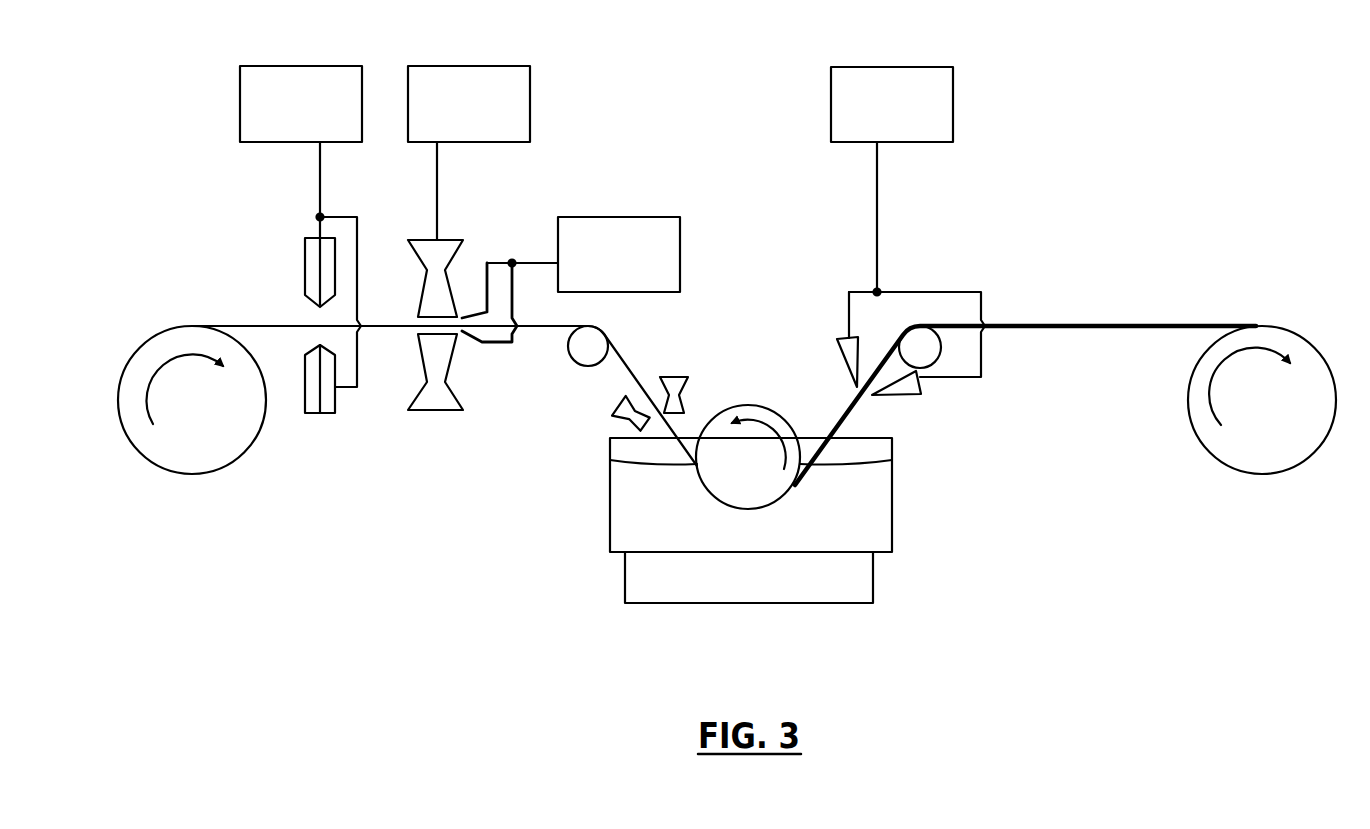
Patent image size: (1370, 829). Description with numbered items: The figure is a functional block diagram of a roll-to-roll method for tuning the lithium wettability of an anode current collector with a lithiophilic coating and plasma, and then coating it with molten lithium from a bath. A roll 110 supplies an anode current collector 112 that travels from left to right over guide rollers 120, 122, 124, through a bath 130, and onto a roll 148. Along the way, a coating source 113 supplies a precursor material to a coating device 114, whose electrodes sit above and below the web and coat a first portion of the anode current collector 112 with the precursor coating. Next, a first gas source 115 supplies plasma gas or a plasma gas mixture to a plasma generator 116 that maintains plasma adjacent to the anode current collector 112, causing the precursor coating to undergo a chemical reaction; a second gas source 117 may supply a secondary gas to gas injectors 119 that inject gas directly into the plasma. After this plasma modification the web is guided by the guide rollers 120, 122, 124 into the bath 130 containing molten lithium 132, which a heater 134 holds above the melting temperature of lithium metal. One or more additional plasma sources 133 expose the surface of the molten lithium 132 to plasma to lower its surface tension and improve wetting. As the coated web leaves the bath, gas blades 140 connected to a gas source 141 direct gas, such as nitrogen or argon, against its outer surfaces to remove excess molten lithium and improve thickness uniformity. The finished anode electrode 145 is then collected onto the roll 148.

The roll 110 is at (150, 462).
The anode current collector 112 is at (280, 326).
The coating source 113 is at (240, 105).
The coating device 114 is at (305, 255).
The first gas source 115 is at (530, 105).
The plasma generator 116 is at (465, 243).
The second gas source 117 is at (680, 253).
The gas injectors 119 is at (477, 340).
The guide roller 120 is at (578, 363).
The guide roller 122 is at (755, 405).
The guide roller 124 is at (937, 360).
The bath 130 is at (610, 528).
The molten lithium 132 is at (625, 479).
The additional plasma source 133 is at (673, 377).
The heater 134 is at (625, 581).
The gas blades 140 is at (838, 352).
The gas source 141 is at (953, 105).
The anode electrode 145 is at (1198, 326).
The roll 148 is at (1277, 470).